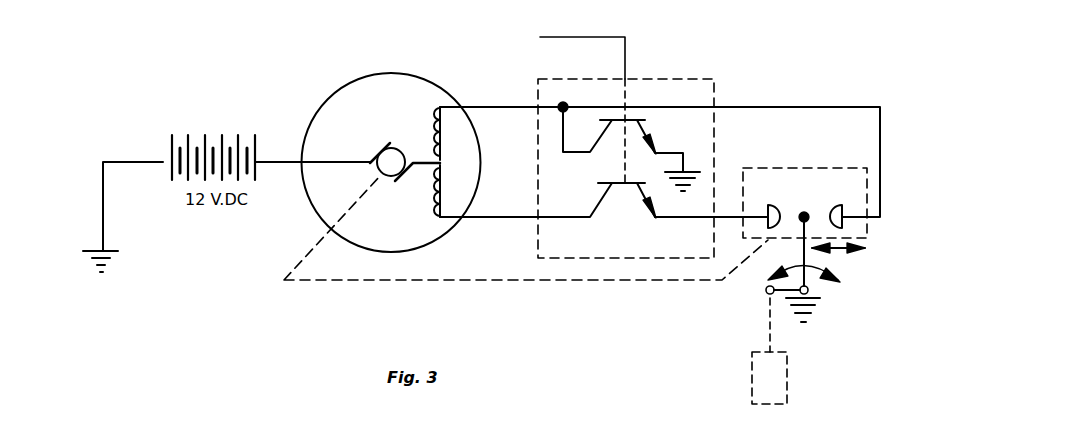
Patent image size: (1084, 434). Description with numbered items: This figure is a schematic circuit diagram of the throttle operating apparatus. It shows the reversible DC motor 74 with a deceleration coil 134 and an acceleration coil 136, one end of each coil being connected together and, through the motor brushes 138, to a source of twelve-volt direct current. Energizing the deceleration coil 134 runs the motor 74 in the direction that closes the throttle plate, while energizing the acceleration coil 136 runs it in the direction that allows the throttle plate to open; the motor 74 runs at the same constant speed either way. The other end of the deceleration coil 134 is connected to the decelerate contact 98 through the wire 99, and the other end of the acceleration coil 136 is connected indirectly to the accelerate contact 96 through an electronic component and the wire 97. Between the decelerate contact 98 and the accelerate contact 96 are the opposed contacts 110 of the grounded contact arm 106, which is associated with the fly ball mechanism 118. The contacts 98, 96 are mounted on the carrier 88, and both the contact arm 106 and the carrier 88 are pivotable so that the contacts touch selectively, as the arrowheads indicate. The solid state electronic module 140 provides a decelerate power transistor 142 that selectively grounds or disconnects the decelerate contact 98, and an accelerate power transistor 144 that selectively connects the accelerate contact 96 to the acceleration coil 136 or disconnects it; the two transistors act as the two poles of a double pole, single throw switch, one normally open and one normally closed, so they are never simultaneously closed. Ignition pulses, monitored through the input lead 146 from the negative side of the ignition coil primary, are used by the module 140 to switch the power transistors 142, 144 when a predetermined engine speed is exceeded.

The reversible DC motor 74 is at (318, 213).
The deceleration coil 134 is at (430, 125).
The acceleration coil 136 is at (433, 197).
The motor brushes 138 is at (383, 173).
The solid state electronic module 140 is at (680, 78).
The decelerate power transistor 142 is at (629, 146).
The accelerate power transistor 144 is at (548, 197).
The input lead 146 is at (582, 100).
The wire 99 is at (660, 152).
The wire 97 is at (711, 226).
The carrier 88 is at (802, 167).
The accelerate contact 96 is at (773, 206).
The decelerate contact 98 is at (840, 205).
The opposed contacts 110 is at (796, 257).
The contact arm 106 is at (808, 260).
The fly ball mechanism 118 is at (787, 372).